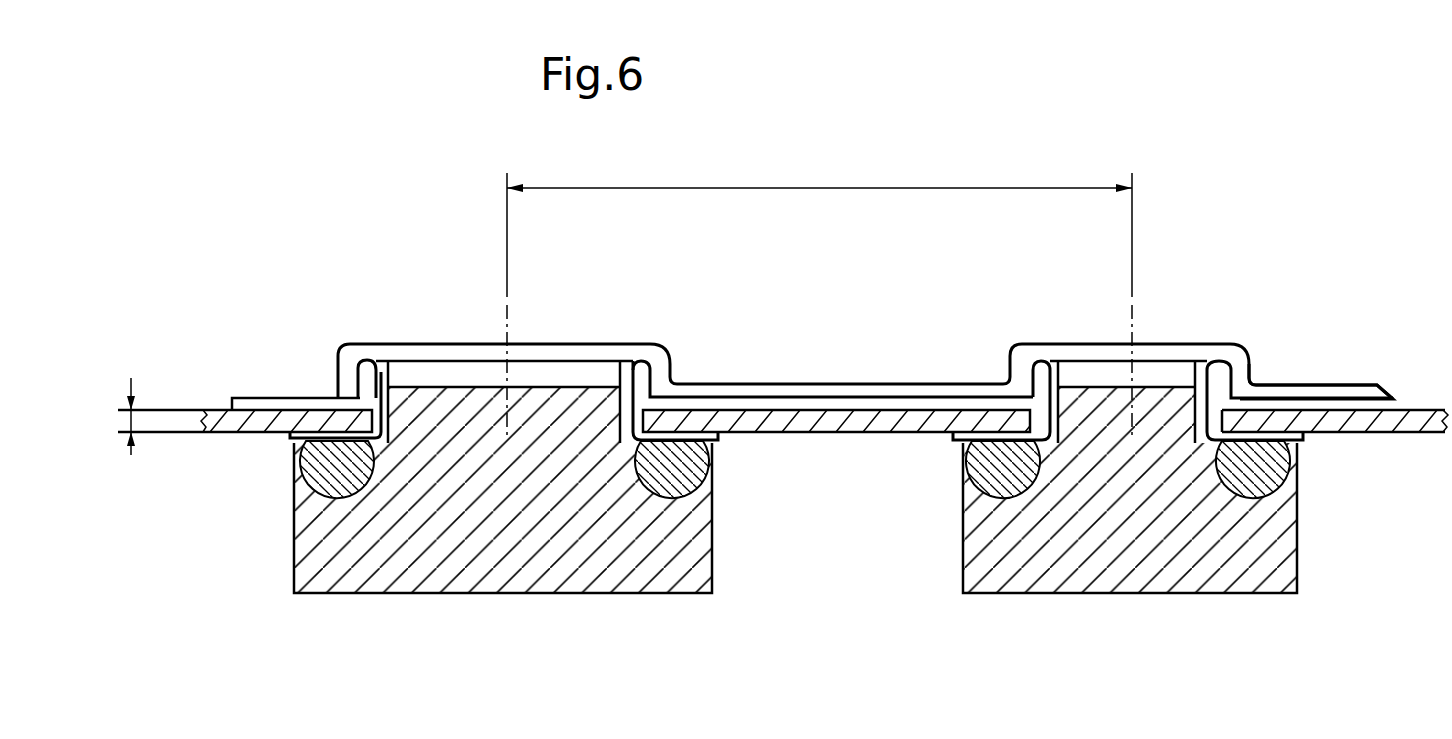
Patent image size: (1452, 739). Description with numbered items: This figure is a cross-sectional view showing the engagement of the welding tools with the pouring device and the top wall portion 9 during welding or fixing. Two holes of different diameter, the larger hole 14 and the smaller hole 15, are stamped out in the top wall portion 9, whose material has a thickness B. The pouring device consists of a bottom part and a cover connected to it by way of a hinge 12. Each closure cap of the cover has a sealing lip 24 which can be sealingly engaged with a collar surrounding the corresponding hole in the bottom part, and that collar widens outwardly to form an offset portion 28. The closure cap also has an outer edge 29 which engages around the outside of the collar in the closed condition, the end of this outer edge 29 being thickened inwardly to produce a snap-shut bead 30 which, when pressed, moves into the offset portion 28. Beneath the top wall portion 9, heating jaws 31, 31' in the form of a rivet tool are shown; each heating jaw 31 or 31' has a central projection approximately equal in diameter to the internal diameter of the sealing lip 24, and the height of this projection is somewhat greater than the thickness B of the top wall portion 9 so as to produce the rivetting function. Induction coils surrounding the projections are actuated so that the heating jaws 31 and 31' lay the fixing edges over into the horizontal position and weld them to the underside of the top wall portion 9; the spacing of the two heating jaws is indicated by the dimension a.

The top wall portion 9 is at (247, 425).
The hinge 12 is at (1400, 392).
The larger hole 14 is at (378, 372).
The smaller hole 15 is at (1250, 382).
The sealing lip 24 is at (1057, 368).
The offset portion 28 is at (1215, 378).
The outer edge 29 is at (348, 378).
The snap-shut bead 30 is at (643, 368).
The heating jaw 31 is at (503, 531).
The heating jaw 31' is at (1130, 514).
The spacing dimension a is at (819, 291).
The thickness of the material of the top wall portion B is at (128, 422).